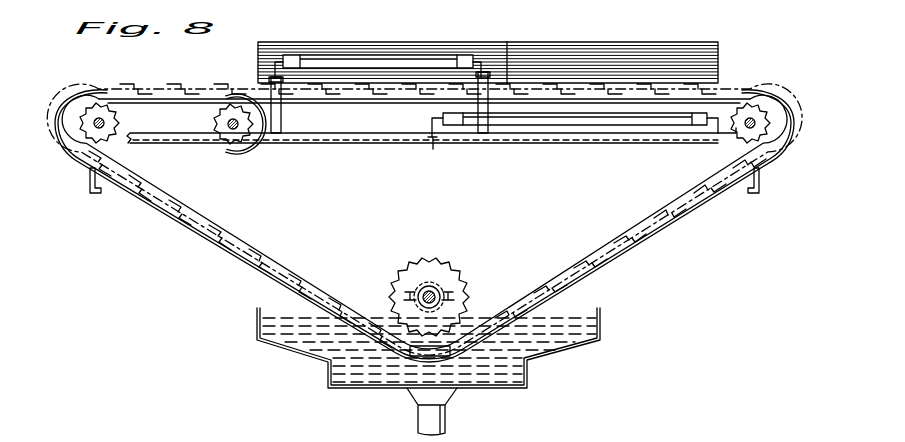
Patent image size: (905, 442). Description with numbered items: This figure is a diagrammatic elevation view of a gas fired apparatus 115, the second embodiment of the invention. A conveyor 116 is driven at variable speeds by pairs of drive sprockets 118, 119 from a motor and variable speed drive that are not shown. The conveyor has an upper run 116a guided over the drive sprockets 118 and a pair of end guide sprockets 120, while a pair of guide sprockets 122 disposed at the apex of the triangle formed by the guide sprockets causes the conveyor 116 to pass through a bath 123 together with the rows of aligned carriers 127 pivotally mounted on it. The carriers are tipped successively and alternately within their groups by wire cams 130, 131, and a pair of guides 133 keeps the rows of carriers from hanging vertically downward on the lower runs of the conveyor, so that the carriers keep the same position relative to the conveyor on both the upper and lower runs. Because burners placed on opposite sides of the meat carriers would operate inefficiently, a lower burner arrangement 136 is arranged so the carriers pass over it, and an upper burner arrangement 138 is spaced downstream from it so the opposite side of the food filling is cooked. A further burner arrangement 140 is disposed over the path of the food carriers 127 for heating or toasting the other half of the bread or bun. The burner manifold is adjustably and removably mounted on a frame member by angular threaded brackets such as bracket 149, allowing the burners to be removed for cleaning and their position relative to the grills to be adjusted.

The gas fired apparatus 115 is at (143, 225).
The conveyor 116 is at (722, 102).
The upper run 116a is at (357, 105).
The drive sprocket 118 is at (80, 118).
The drive sprocket 119 is at (212, 122).
The end guide sprocket 120 is at (736, 134).
The guide sprocket 122 is at (410, 263).
The bath 123 is at (543, 348).
The carrier 127 is at (153, 88).
The wire cam 130 is at (242, 160).
The wire cam 131 is at (253, 96).
The guide 133 is at (207, 247).
The lower burner arrangement 136 is at (550, 118).
The upper burner arrangement 138 is at (625, 43).
The burner arrangement 140 is at (337, 57).
The angular threaded bracket 149 is at (433, 120).